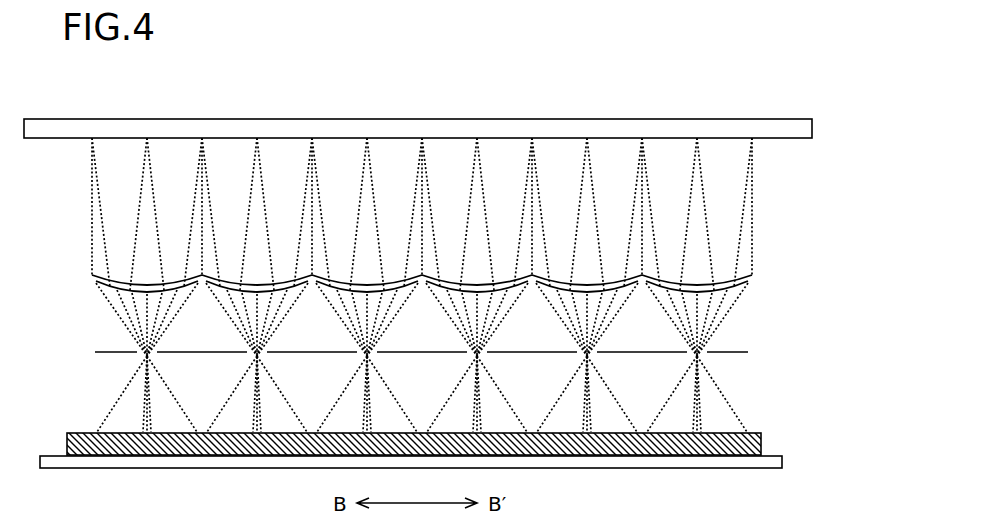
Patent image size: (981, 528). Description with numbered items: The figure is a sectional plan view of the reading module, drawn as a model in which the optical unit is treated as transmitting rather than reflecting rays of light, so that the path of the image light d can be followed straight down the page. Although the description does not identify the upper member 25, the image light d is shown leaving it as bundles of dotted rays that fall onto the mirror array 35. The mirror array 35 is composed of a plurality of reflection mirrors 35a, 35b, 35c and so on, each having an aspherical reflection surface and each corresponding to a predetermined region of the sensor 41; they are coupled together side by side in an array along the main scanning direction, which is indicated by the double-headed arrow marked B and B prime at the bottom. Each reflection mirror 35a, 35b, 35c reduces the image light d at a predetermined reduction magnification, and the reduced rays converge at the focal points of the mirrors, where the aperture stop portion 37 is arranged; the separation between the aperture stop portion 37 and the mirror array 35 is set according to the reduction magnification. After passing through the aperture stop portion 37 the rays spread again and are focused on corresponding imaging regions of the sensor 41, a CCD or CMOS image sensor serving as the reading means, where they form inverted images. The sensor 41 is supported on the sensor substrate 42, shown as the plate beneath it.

The light source substrate 25 is at (752, 119).
The image light d is at (752, 222).
The mirror array 35 is at (462, 305).
The reflection mirror 35a is at (740, 290).
The reflection mirror 35b is at (613, 293).
The reflection mirror 35c is at (502, 293).
The aperture stop portion 37 is at (113, 352).
The sensor 41 is at (66, 450).
The sensor substrate 42 is at (772, 456).